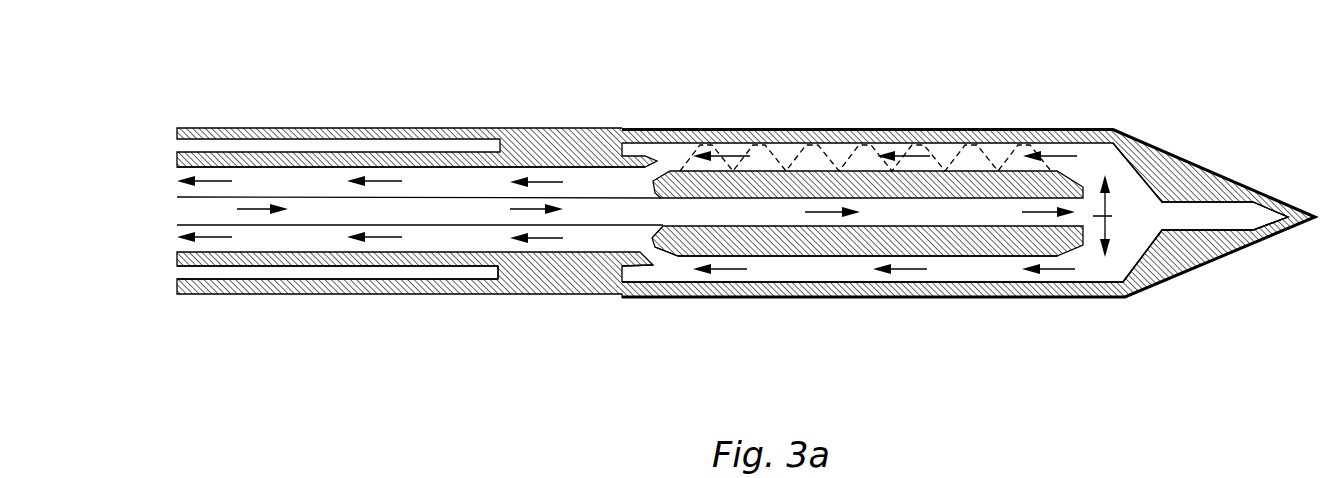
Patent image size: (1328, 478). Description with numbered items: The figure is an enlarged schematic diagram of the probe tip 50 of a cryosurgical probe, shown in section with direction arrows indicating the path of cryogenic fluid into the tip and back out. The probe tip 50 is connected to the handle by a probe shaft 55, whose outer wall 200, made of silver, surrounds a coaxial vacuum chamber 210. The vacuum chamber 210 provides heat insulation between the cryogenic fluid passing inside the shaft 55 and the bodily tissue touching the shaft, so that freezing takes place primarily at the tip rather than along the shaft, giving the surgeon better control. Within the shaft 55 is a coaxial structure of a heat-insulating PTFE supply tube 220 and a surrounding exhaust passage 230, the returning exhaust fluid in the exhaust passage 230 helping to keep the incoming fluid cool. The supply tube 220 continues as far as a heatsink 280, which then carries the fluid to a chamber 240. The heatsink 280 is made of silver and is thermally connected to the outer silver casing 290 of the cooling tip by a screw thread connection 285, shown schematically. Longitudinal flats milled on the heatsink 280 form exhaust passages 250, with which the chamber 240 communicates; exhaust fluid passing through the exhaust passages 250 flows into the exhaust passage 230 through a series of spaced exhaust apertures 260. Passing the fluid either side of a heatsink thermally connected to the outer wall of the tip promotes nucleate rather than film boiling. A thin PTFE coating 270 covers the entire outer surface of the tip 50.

The probe tip 50 is at (841, 130).
The probe shaft 55 is at (237, 126).
The outer wall 200 is at (208, 285).
The vacuum chamber 210 is at (373, 272).
The supply tube 220 is at (580, 217).
The exhaust passage 230 is at (482, 183).
The chamber 240 is at (1122, 173).
The exhaust passages 250 is at (850, 272).
The exhaust apertures 260 is at (657, 260).
The PTFE coating 270 is at (1042, 298).
The heatsink 280 is at (973, 240).
The screw thread connection 285 is at (1008, 143).
The outer silver casing 290 is at (1170, 258).